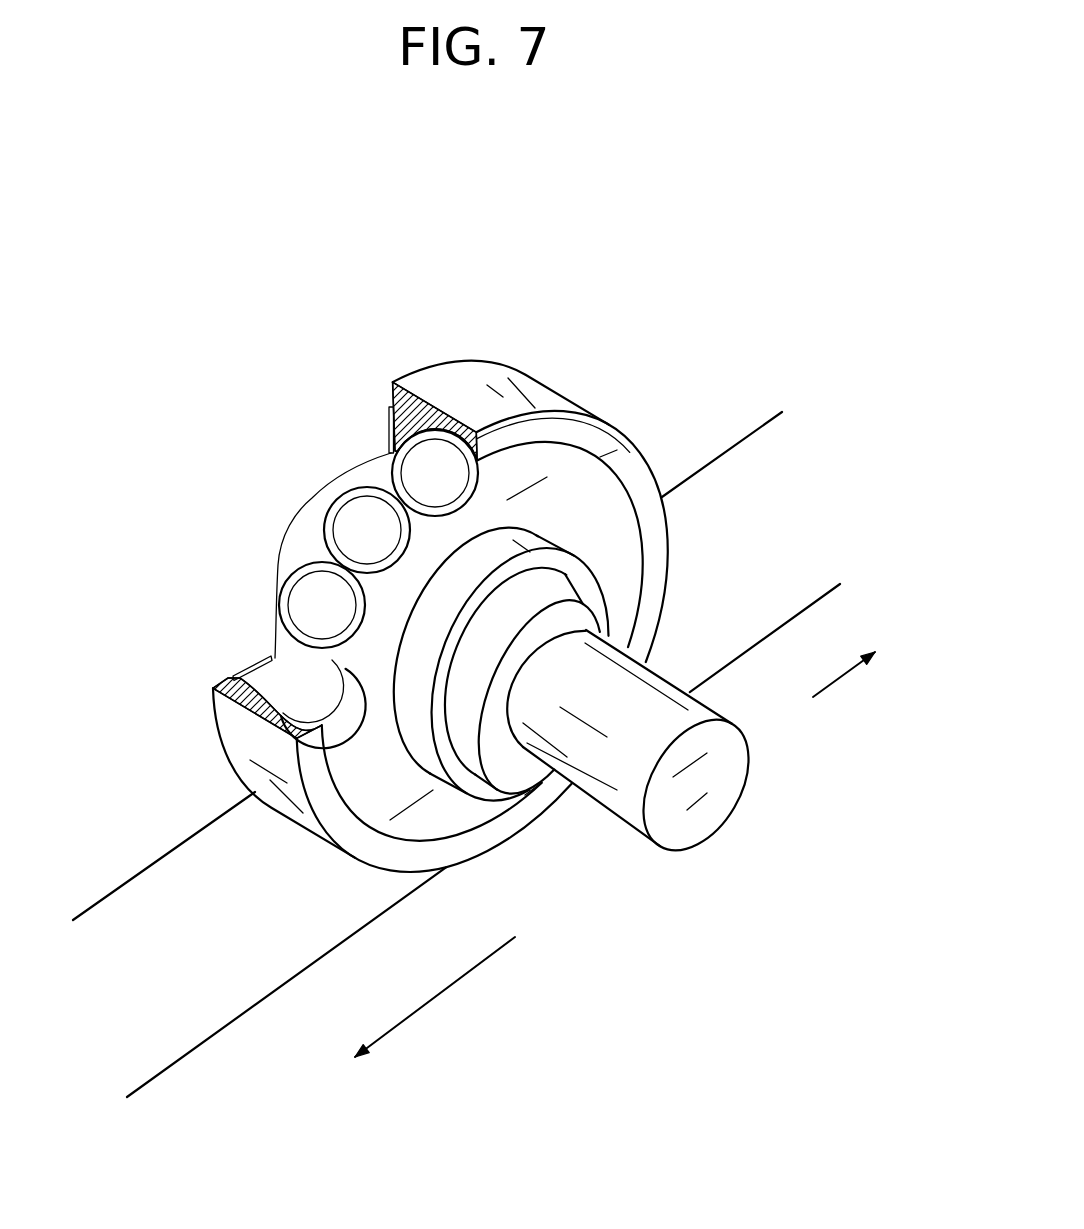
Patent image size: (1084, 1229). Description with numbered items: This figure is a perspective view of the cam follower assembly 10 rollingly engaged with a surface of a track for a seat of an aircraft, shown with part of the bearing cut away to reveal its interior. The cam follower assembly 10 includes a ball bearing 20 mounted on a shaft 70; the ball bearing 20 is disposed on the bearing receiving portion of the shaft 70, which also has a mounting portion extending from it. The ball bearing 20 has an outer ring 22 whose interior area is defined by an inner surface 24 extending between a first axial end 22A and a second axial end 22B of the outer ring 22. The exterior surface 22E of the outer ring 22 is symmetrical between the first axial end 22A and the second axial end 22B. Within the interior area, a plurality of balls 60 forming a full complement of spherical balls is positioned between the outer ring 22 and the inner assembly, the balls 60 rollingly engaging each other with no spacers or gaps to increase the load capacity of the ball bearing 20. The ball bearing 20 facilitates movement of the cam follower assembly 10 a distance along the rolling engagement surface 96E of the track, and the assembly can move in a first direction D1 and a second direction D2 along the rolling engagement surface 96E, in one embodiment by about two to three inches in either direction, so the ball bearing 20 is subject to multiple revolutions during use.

The cam follower assembly 10 is at (668, 395).
The ball bearing 20 is at (577, 405).
The outer ring 22 is at (417, 400).
The first axial end 22A is at (527, 433).
The second axial end 22B is at (392, 392).
The exterior surface 22E is at (292, 795).
The inner surface 24 is at (389, 432).
The balls 60 is at (307, 498).
The shaft 70 is at (665, 897).
The rolling engagement surface 96E is at (257, 960).
The first direction D1 is at (443, 993).
The second direction D2 is at (848, 672).